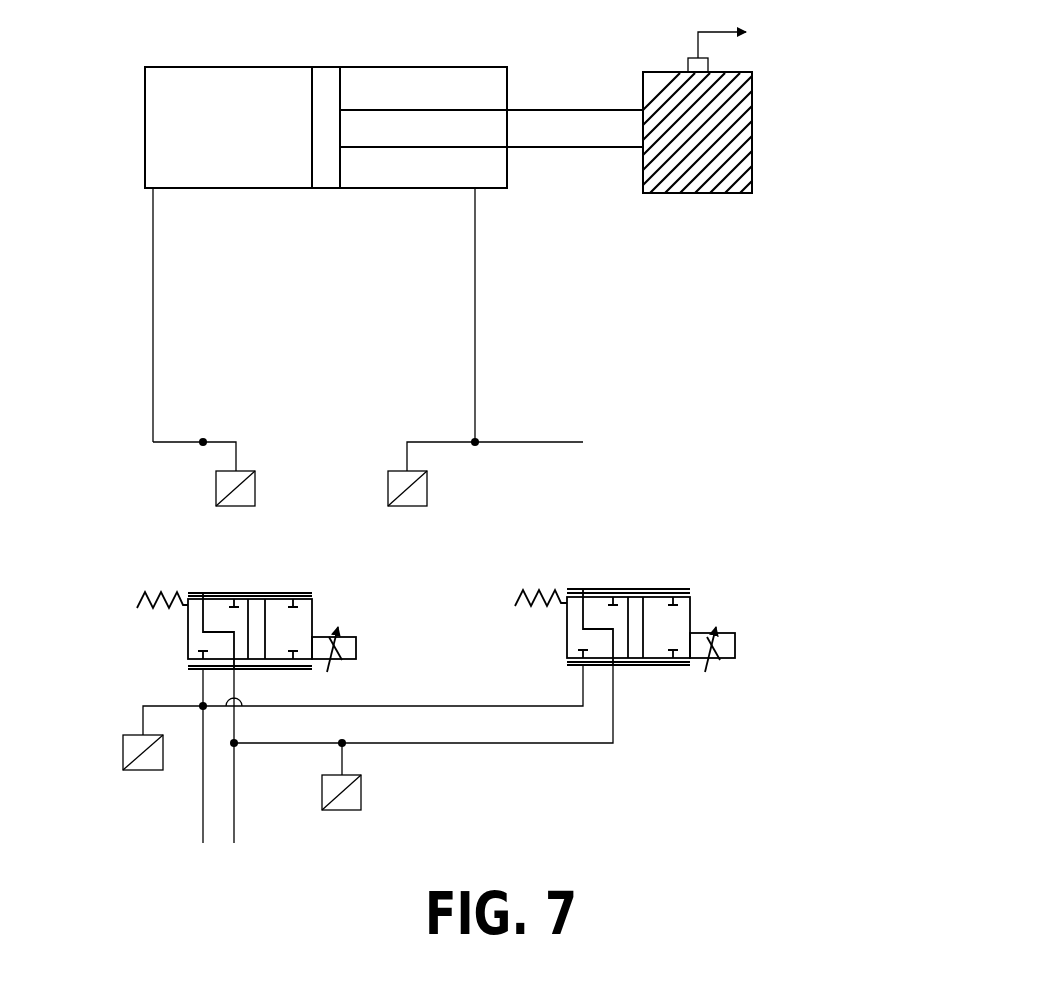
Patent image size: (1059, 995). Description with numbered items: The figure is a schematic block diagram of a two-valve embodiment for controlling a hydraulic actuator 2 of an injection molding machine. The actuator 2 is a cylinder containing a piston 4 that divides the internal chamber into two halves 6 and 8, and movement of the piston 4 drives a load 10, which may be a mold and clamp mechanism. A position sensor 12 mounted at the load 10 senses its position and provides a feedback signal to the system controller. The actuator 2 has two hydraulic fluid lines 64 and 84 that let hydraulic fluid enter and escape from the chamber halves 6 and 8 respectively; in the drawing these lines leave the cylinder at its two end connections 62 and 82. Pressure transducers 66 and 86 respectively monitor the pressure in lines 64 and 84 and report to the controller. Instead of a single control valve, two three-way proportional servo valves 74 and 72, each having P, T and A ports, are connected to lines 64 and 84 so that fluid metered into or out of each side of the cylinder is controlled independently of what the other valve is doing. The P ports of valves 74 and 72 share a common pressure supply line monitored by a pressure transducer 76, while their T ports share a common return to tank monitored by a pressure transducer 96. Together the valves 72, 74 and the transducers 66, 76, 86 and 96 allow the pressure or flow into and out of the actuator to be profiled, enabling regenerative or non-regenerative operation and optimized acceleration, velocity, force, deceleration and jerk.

The hydraulic actuator 2 is at (420, 68).
The piston 4 is at (325, 178).
The chamber half 6 is at (157, 135).
The chamber half 8 is at (417, 178).
The load 10 is at (733, 152).
The position sensor 12 is at (715, 60).
The head-end port 62 is at (152, 190).
The hydraulic fluid line 64 is at (152, 338).
The pressure transducer 66 is at (257, 480).
The proportional valve 72 is at (656, 632).
The proportional valve 74 is at (277, 635).
The pressure transducer 76 is at (121, 757).
The rod-end port 82 is at (478, 190).
The hydraulic fluid line 84 is at (478, 341).
The pressure transducer 86 is at (429, 480).
The pressure transducer 96 is at (363, 783).